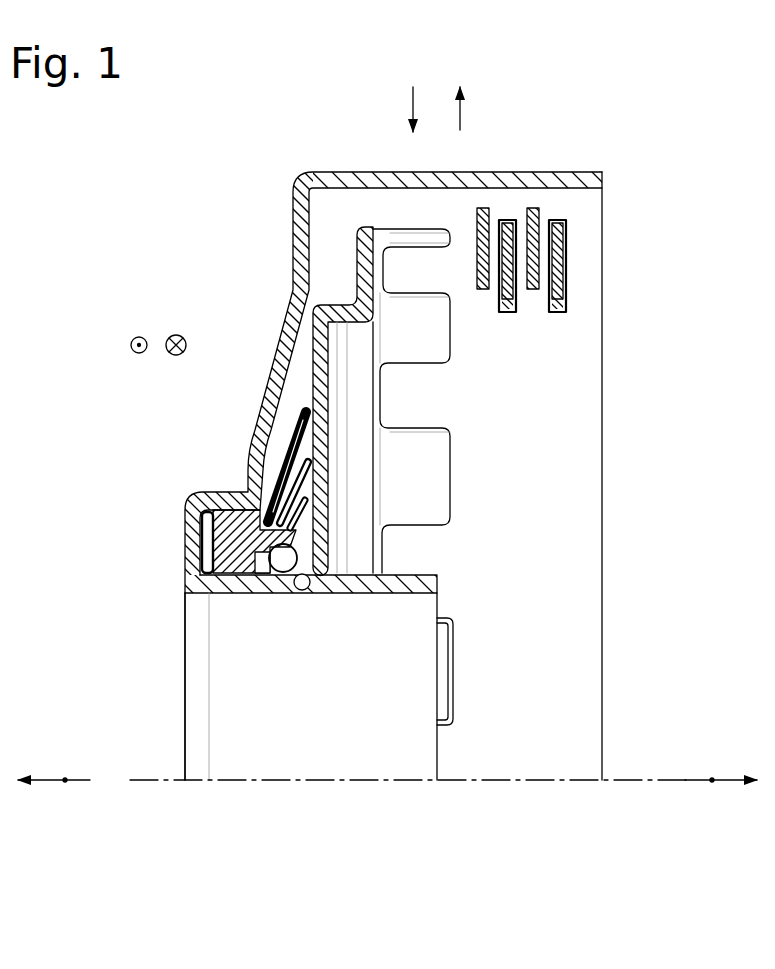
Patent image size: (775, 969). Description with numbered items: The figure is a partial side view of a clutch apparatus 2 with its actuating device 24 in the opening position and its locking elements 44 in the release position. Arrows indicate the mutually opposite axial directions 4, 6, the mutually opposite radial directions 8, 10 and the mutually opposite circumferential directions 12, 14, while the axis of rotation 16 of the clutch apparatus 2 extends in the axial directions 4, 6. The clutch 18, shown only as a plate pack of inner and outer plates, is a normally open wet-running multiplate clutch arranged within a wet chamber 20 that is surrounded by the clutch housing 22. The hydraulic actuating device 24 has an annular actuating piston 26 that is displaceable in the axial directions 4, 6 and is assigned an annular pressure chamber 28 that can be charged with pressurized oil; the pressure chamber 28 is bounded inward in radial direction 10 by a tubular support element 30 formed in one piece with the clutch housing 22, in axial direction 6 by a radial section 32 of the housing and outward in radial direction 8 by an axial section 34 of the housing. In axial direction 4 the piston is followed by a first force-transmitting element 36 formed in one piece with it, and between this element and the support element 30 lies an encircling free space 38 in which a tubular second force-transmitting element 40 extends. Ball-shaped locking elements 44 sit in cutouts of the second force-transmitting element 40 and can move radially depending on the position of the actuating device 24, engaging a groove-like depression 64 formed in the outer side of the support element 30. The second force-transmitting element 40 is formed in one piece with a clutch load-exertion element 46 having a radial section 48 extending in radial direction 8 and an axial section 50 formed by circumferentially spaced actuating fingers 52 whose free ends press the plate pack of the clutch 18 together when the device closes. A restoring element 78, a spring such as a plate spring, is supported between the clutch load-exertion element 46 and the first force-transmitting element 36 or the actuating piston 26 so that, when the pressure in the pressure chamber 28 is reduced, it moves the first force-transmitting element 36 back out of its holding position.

The clutch apparatus 2 is at (168, 293).
The axial direction 4 is at (712, 780).
The axial direction 6 is at (65, 780).
The radial direction 8 is at (460, 118).
The radial direction 10 is at (413, 102).
The circumferential direction 12 is at (132, 338).
The circumferential direction 14 is at (183, 336).
The axis of rotation 16 is at (424, 779).
The clutch 18 is at (572, 243).
The wet chamber 20 is at (541, 417).
The clutch housing 22 is at (583, 170).
The actuating device 24 is at (340, 297).
The actuating piston 26 is at (225, 529).
The pressure chamber 28 is at (207, 542).
The support element 30 is at (242, 593).
The radial section 32 is at (193, 520).
The axial section 34 is at (228, 500).
The first force-transmitting element 36 is at (260, 527).
The free space 38 is at (248, 562).
The second force-transmitting element 40 is at (308, 558).
The locking element 44 is at (283, 558).
The clutch load-exertion element 46 is at (340, 422).
The radial section 48 is at (322, 480).
The axial section 50 is at (395, 223).
The actuating finger 52 is at (431, 237).
The depression 64 is at (325, 590).
The restoring element 78 is at (303, 497).